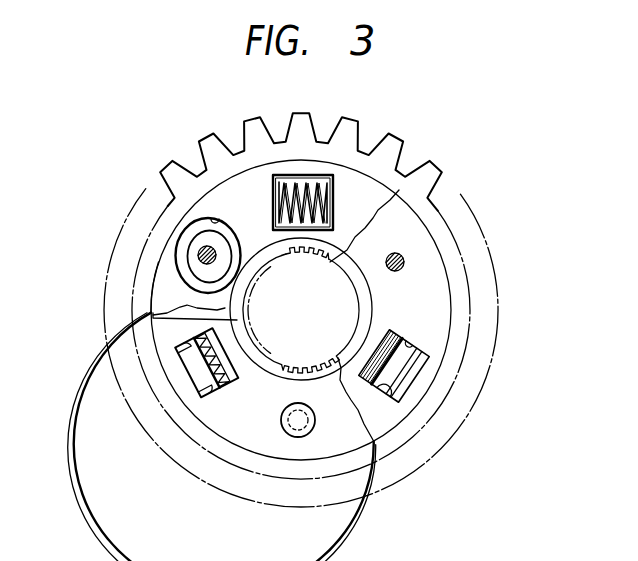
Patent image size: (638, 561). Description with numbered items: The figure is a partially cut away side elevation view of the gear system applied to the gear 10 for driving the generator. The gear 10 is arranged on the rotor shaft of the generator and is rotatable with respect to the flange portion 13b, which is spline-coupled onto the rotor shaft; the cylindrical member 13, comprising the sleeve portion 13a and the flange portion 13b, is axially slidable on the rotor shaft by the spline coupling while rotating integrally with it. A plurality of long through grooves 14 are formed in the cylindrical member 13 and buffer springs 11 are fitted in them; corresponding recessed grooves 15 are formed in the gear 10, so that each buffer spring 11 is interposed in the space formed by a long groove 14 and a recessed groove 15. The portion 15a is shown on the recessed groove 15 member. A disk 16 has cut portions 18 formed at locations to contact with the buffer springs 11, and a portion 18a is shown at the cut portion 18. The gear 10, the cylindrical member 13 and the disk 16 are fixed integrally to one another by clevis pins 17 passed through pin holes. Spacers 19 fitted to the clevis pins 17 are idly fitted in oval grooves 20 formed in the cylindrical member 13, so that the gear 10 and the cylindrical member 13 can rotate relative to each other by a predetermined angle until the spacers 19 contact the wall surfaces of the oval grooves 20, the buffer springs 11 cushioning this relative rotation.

The gear for driving the generator 10 is at (398, 148).
The buffer spring 11 is at (305, 183).
The cylindrical member 13 is at (253, 202).
The sleeve portion 13a is at (237, 318).
The flange portion 13b is at (162, 278).
The long through groove 14 is at (290, 180).
The recessed groove 15 is at (410, 372).
The pawl member portion 15a is at (408, 345).
The disk 16 is at (215, 415).
The clevis pin 17 is at (200, 250).
The cut portion 18 is at (193, 370).
The cup portion 18a is at (193, 350).
The spacer 19 is at (197, 240).
The oval groove 20 is at (215, 218).